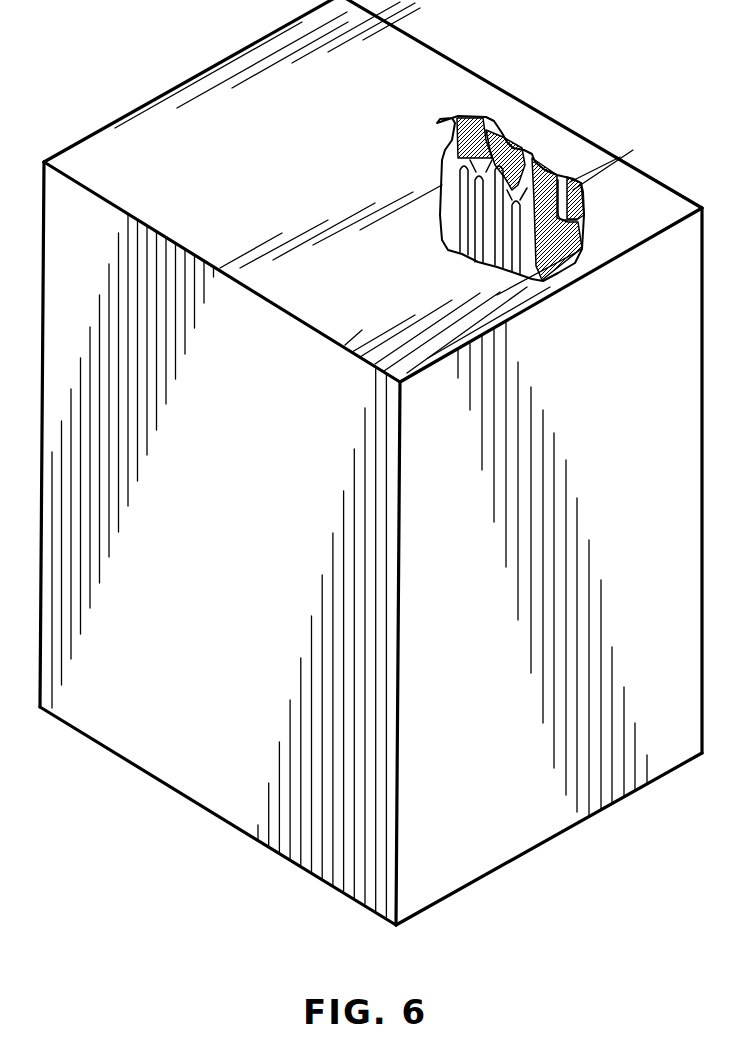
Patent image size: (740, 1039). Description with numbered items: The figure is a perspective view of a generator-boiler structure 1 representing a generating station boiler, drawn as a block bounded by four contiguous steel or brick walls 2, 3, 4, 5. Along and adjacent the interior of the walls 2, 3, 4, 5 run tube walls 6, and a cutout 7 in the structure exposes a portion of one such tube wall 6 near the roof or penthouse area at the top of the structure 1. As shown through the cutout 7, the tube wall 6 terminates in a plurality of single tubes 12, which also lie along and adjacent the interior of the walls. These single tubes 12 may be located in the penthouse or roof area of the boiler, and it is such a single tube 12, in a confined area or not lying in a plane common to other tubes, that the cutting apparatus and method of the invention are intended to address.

The structure 1 is at (236, 905).
The wall 2 is at (232, 551).
The wall 3 is at (632, 535).
The wall 4 is at (519, 174).
The wall 5 is at (73, 148).
The tube wall 6 is at (470, 220).
The cutout 7 is at (577, 258).
The single tube 12 is at (520, 157).